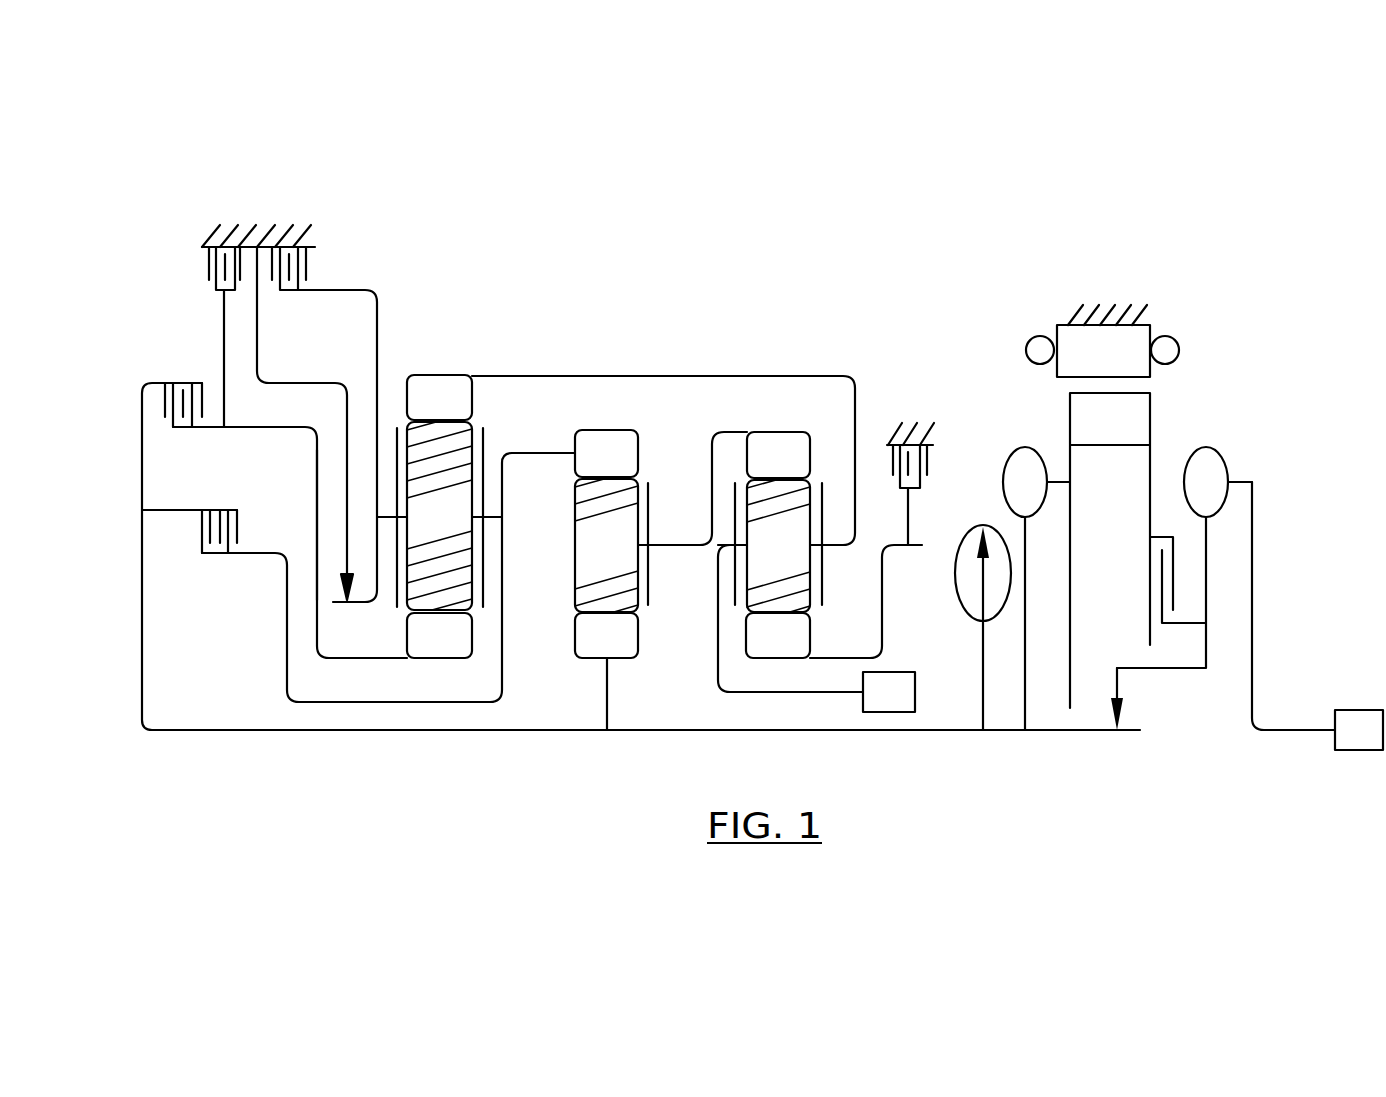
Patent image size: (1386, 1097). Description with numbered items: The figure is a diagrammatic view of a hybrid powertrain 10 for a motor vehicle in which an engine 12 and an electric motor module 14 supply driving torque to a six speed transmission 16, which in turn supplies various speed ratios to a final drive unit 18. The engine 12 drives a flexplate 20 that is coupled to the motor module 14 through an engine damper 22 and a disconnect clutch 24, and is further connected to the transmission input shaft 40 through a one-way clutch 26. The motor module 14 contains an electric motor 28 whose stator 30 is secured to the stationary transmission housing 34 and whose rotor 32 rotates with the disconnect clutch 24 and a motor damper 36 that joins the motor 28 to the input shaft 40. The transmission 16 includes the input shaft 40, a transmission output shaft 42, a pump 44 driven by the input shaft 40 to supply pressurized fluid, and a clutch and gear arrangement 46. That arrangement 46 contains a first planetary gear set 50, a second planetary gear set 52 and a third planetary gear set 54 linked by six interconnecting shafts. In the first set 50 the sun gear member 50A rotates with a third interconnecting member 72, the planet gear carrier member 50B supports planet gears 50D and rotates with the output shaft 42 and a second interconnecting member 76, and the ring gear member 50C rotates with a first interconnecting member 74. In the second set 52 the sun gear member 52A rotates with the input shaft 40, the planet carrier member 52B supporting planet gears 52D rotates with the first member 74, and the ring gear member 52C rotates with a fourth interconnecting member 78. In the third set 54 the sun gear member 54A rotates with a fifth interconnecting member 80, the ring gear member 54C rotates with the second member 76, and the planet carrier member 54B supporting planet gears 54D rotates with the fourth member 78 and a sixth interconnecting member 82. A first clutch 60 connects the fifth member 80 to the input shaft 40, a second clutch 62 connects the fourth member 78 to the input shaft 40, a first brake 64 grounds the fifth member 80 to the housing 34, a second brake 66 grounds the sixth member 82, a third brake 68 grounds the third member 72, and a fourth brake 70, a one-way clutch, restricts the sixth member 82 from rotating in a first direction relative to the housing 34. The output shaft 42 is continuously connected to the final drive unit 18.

The powertrain 10 is at (1229, 223).
The engine 12 is at (1372, 743).
The electric motor module 14 is at (1206, 322).
The transmission 16 is at (421, 247).
The final drive unit 18 is at (902, 705).
The flexplate 20 is at (1253, 570).
The engine damper 22 is at (1210, 448).
The disconnect clutch 24 is at (1166, 535).
The one-way clutch 26 is at (1121, 712).
The electric motor 28 is at (1136, 516).
The stator 30 is at (1116, 364).
The rotor 32 is at (1123, 433).
The transmission housing 34 is at (271, 243).
The motor damper 36 is at (1022, 448).
The transmission input shaft 40 is at (864, 731).
The transmission output shaft 42 is at (821, 694).
The pump 44 is at (954, 574).
The clutch and gear arrangement 46 is at (794, 355).
The first planetary gear set 50 is at (795, 604).
The sun gear member 50A is at (798, 649).
The planet gear carrier member 50B is at (823, 572).
The ring gear member 50C is at (799, 468).
The planet gears 50D is at (799, 559).
The second planetary gear set 52 is at (629, 603).
The sun gear member 52A is at (627, 649).
The planet carrier member 52B is at (649, 588).
The ring gear member 52C is at (627, 466).
The planet gears 52D is at (627, 558).
The third planetary gear set 54 is at (478, 576).
The sun gear member 54A is at (460, 649).
The planet carrier member 54B is at (485, 437).
The ring gear member 54C is at (460, 410).
The planet gears 54D is at (460, 530).
The first clutch 60 is at (201, 405).
The second clutch 62 is at (200, 530).
The first brake 64 is at (209, 262).
The second brake 66 is at (310, 264).
The third brake 68 is at (928, 473).
The fourth brake 70 is at (340, 582).
The third interconnecting member 72 is at (884, 620).
The first interconnecting member 74 is at (708, 455).
The second interconnecting member 76 is at (590, 376).
The fourth interconnecting member 78 is at (358, 703).
The fifth interconnecting member 80 is at (316, 478).
The sixth interconnecting member 82 is at (344, 294).